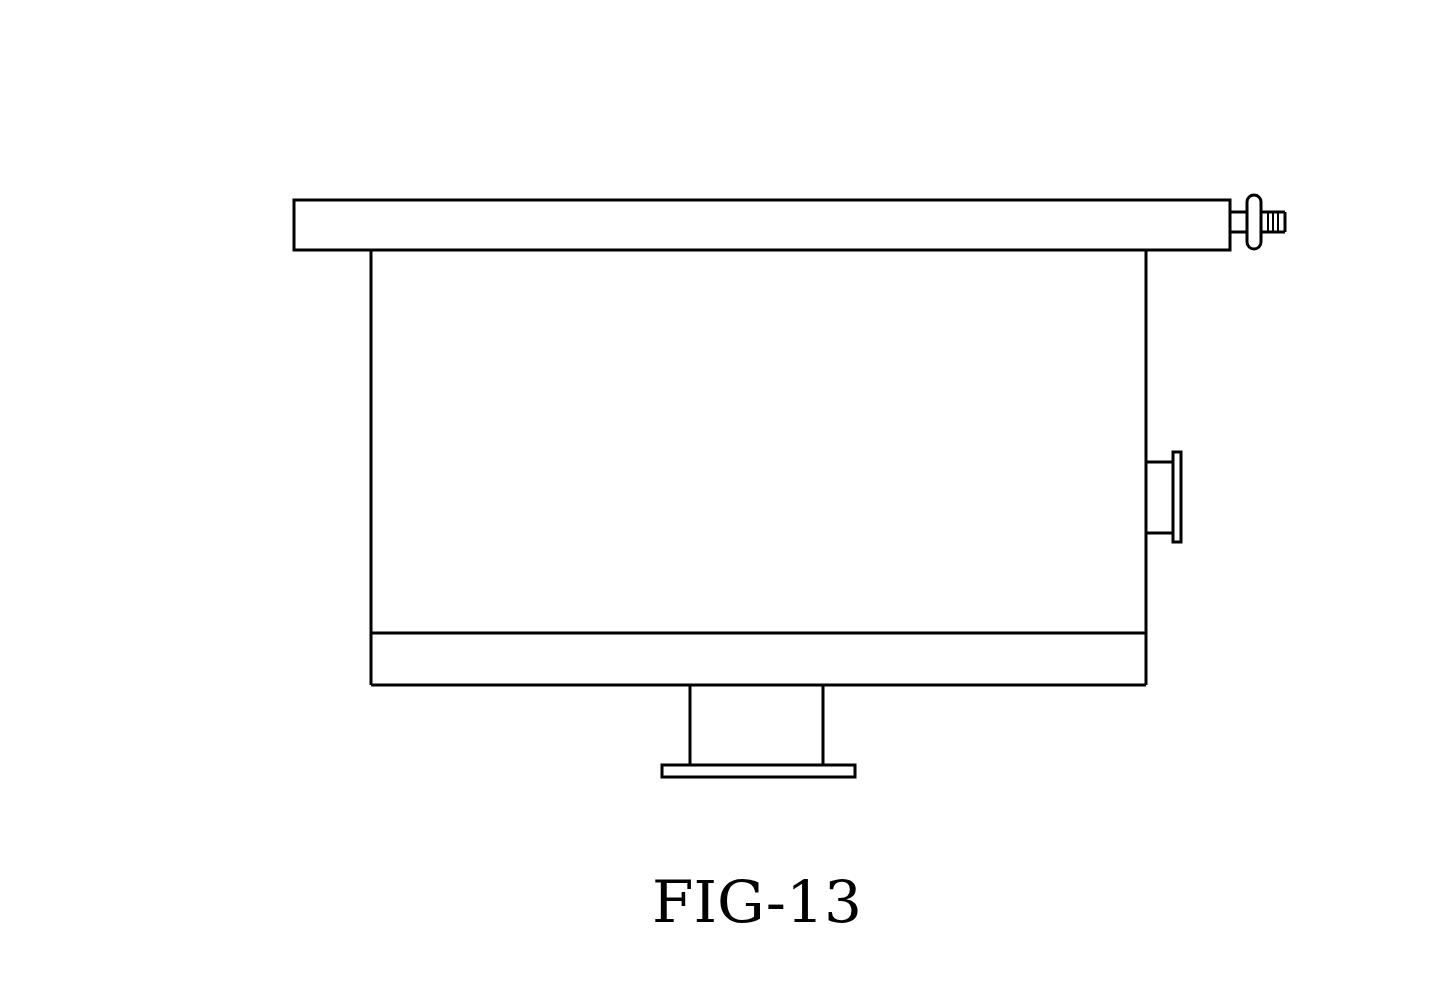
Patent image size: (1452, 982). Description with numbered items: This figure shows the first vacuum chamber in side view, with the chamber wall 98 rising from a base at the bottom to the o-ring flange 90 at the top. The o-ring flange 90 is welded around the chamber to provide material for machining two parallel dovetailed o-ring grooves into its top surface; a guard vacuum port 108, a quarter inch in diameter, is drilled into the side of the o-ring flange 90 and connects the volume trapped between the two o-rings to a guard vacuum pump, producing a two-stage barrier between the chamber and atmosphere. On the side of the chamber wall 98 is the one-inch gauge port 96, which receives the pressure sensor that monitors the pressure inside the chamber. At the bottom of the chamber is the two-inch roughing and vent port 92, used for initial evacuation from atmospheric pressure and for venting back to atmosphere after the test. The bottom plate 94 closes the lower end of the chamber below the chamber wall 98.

The o-ring flange 90 is at (506, 182).
The guard vacuum port 108 is at (1302, 195).
The chamber wall 98 is at (349, 433).
The bottom plate 94 is at (439, 703).
The roughing and vent port 92 is at (833, 791).
The gauge port 96 is at (1196, 438).